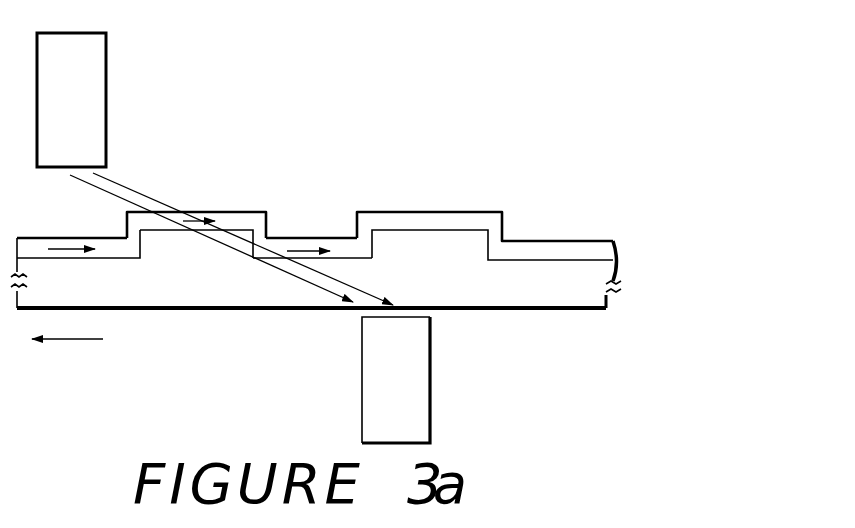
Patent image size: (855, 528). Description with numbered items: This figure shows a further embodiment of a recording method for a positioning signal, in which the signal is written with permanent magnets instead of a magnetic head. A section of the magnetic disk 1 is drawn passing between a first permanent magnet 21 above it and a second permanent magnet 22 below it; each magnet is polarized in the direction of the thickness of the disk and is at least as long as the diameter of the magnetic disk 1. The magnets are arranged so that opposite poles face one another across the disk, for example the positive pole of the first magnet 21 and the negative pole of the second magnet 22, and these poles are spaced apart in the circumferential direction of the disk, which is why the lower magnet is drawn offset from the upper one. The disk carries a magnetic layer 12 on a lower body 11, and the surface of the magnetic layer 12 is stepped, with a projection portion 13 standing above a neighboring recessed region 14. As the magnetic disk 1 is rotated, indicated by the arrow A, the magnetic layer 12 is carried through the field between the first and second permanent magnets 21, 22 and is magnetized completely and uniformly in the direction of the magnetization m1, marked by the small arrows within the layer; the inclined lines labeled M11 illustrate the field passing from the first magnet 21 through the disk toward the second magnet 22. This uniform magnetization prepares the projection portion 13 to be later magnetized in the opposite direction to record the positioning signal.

The magnetic disk 1 is at (510, 167).
The substrate 11 is at (507, 297).
The magnetic layer 12 is at (543, 252).
The projection portion 13 is at (252, 213).
The recessed portion (groove) 14 is at (340, 240).
The first permanent magnet 21 is at (98, 67).
The second permanent magnet 22 is at (420, 388).
The direction of the magnetization m1 is at (193, 213).
The magnetic flux from magnet 21 M11 is at (287, 275).
The direction of medium travel A is at (78, 340).